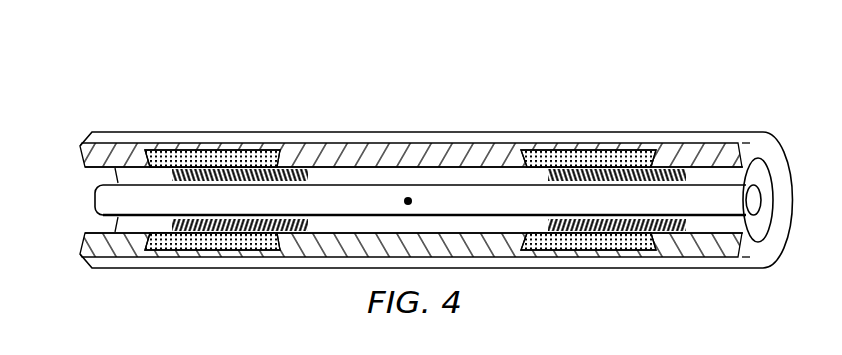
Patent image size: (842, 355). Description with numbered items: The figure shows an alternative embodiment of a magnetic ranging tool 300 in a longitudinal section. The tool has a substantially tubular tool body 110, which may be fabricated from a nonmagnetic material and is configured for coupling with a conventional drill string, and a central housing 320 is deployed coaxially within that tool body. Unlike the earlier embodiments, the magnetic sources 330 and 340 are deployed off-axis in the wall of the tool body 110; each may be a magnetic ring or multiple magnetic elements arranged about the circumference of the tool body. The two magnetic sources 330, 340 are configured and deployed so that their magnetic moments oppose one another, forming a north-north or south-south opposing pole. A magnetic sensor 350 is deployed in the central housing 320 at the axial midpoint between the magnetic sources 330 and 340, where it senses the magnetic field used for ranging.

The magnetic ranging tool 300 is at (513, 90).
The tool body 110 is at (323, 132).
The central housing 320 is at (108, 185).
The magnetic source 330 is at (158, 166).
The magnetic source 340 is at (686, 178).
The magnetic sensor 350 is at (408, 199).